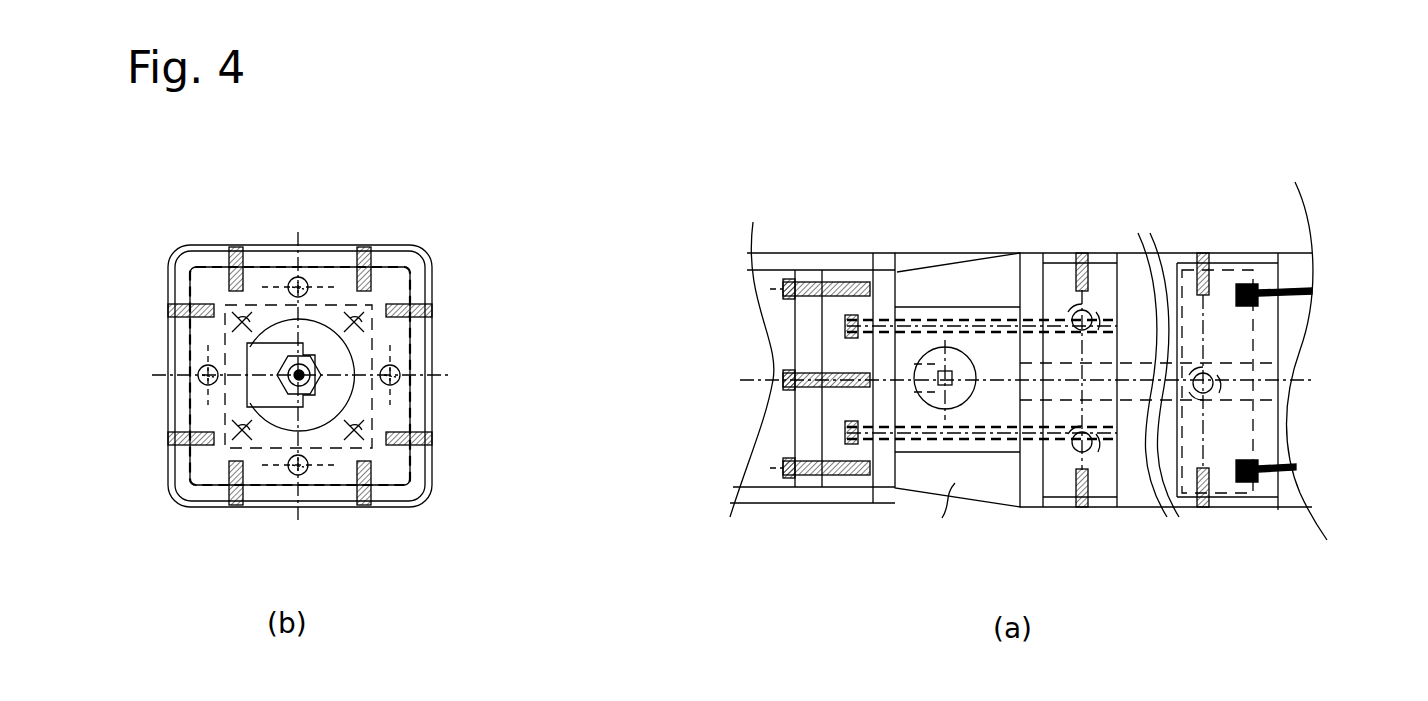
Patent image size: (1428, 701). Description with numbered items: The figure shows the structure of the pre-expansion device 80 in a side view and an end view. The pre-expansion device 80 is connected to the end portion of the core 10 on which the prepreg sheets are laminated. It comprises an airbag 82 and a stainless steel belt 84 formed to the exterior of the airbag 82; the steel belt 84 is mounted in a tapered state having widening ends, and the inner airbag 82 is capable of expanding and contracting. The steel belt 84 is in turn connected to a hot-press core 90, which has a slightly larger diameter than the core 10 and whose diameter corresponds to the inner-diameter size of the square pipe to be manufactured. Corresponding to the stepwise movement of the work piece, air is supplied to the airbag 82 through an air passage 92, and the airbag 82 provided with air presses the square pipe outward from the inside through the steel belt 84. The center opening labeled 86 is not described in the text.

The core 10 is at (815, 260).
The pre-expansion device 80 is at (1062, 177).
The airbag 82 is at (955, 485).
The stainless steel belt 84 is at (325, 247).
The center shaft hole 86 is at (935, 392).
The hot-press core 90 is at (1108, 512).
The air passage 92 is at (1260, 380).